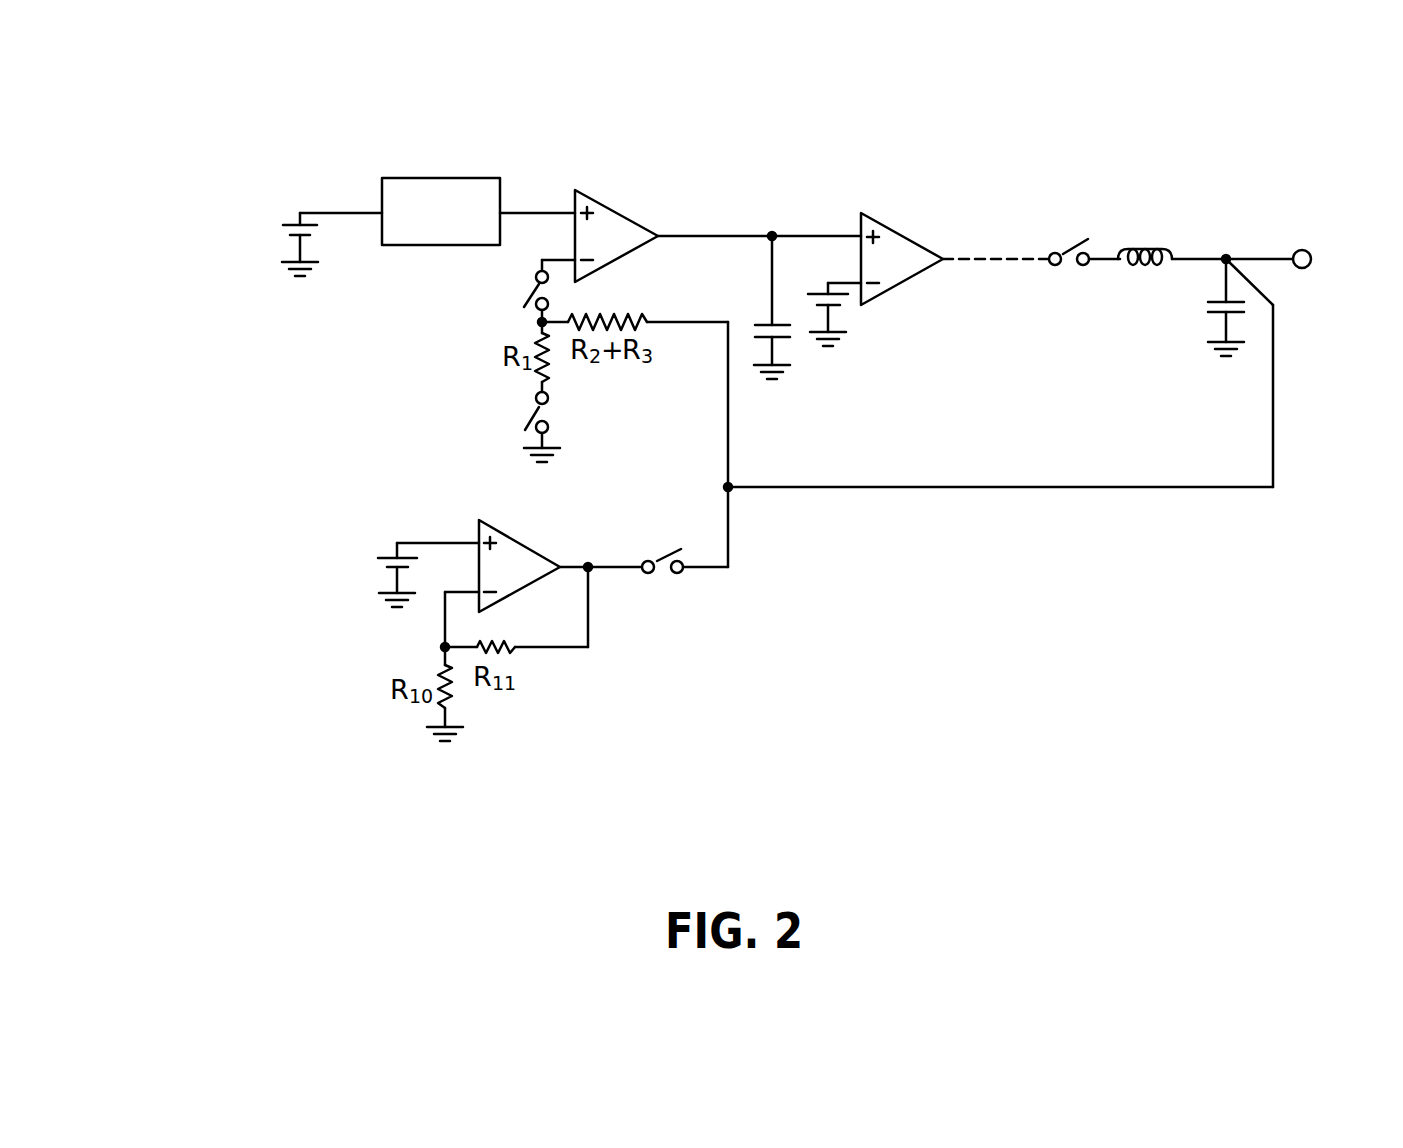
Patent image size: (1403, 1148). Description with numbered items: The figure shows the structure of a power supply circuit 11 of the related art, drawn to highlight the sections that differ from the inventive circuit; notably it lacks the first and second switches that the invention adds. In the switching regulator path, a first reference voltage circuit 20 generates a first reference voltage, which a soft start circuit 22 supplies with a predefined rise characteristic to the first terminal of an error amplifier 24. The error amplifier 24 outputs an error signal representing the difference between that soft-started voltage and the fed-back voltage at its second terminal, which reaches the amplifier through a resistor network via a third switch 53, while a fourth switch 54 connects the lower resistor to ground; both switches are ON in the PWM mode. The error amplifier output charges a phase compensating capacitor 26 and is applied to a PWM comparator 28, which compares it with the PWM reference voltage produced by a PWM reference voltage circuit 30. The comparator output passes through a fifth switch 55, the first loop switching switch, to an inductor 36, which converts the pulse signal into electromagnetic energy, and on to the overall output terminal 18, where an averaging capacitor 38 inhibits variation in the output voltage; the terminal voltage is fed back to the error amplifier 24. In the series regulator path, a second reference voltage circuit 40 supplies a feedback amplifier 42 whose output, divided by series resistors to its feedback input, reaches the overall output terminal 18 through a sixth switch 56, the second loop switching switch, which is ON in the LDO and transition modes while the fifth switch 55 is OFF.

The power supply circuit 11 is at (973, 565).
The overall output terminal 18 is at (1302, 250).
The first reference voltage circuit 20 is at (317, 194).
The soft start circuit 22 is at (450, 177).
The error amplifier 24 is at (617, 207).
The phase compensating capacitor 26 is at (748, 347).
The PWM comparator 28 is at (903, 230).
The PWM reference voltage circuit 30 is at (848, 312).
The inductor 36 is at (1145, 243).
The capacitor 38 is at (1198, 307).
The second reference voltage circuit 40 is at (375, 580).
The feedback amplifier 42 is at (520, 540).
The third switch 53 is at (525, 294).
The fourth switch 54 is at (520, 418).
The fifth switch 55 is at (1068, 272).
The sixth switch 56 is at (663, 585).